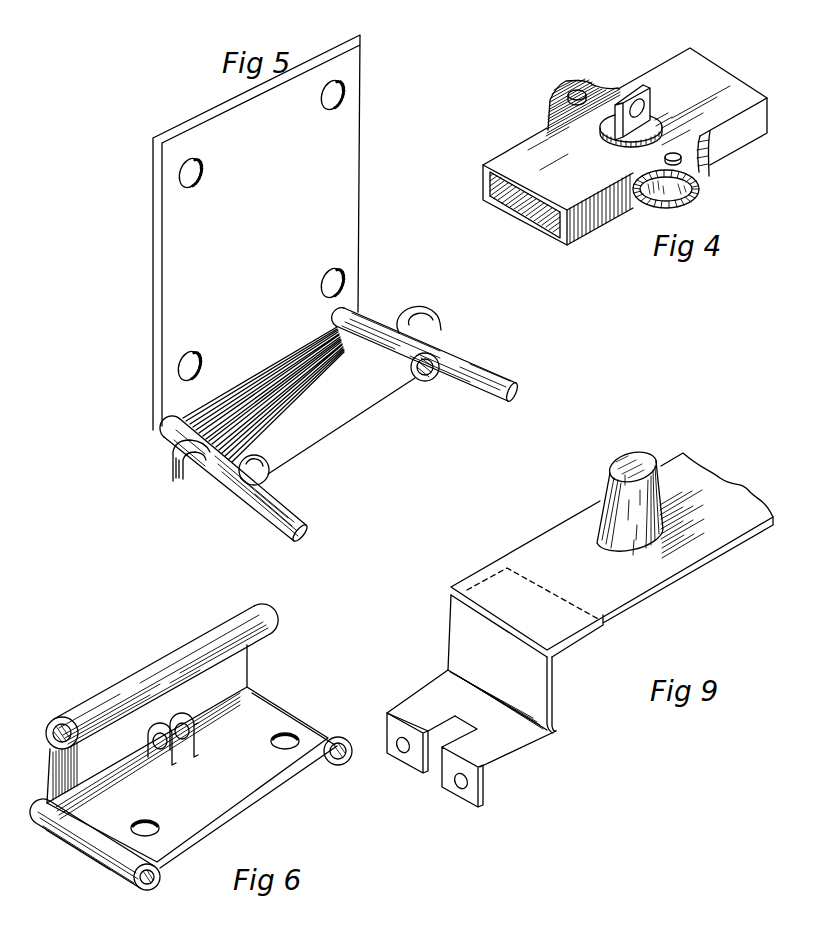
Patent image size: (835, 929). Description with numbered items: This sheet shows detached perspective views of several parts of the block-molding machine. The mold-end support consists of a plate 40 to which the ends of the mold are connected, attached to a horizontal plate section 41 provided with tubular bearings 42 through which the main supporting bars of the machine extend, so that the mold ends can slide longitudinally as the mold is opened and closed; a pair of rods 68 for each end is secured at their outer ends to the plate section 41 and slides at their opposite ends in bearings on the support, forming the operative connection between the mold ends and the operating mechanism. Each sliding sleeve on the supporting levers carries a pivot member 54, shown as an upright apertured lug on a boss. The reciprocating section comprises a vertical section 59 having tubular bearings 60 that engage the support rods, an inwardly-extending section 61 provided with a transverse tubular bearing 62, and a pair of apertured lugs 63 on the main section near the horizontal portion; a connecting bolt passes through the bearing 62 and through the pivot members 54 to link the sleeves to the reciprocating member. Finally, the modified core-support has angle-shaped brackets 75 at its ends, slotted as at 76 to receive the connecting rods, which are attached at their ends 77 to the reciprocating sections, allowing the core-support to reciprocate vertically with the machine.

In FIG. 5, the plate 40 is at (353, 193).
In FIG. 5, the horizontal plate section 41 is at (348, 397).
In FIG. 5, the tubular bearings 42 is at (234, 462).
In FIG. 5, the rods 68 is at (494, 360).
In FIG. 4, the pivot member 54 is at (644, 83).
In FIG. 9, the angle-shaped brackets 75 is at (553, 706).
In FIG. 9, the slot 76 is at (457, 717).
In FIG. 9, the ends 77 is at (481, 804).
In FIG. 6, the vertical section 59 is at (237, 788).
In FIG. 6, the tubular bearings 60 is at (347, 767).
In FIG. 6, the inwardly-extending section 61 is at (48, 725).
In FIG. 6, the transverse tubular bearing 62 is at (147, 676).
In FIG. 6, the apertured lugs 63 is at (195, 733).